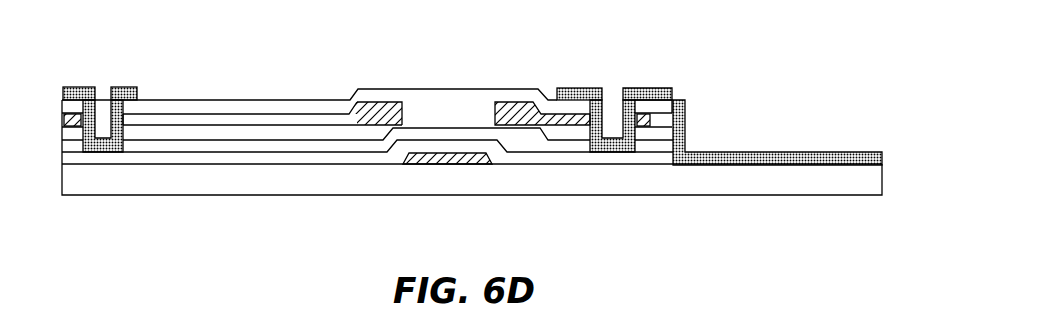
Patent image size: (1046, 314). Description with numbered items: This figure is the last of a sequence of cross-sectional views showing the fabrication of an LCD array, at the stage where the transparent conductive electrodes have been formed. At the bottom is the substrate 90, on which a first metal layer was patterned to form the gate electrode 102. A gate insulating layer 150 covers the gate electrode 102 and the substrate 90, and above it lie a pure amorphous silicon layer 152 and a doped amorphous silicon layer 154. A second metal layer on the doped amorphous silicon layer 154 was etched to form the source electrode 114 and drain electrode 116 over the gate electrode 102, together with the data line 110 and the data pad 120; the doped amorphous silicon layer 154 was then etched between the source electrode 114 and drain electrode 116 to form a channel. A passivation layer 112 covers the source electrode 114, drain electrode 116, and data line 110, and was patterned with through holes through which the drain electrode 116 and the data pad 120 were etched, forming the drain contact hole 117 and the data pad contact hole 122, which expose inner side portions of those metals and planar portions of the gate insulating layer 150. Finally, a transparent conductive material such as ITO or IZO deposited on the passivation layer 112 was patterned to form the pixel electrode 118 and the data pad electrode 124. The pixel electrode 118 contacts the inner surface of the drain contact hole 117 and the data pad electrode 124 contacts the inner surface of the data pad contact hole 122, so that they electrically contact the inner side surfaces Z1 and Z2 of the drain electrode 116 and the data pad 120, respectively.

The substrate 90 is at (733, 183).
The gate electrode 102 is at (435, 158).
The data line 110 is at (275, 106).
The passivation layer 112 is at (437, 96).
The source electrode 114 is at (384, 105).
The drain electrode 116 is at (512, 103).
The drain contact hole 117 is at (612, 101).
The pixel electrode 118 is at (746, 157).
The data pad 120 is at (130, 107).
The data pad contact hole 122 is at (104, 98).
The data pad electrode 124 is at (72, 88).
The gate insulating layer 150 is at (556, 153).
The pure amorphous silicon layer 152 is at (187, 148).
The doped amorphous silicon layer 154 is at (319, 133).
The inner side surface of the drain electrode Z1 is at (607, 155).
The inner side surface of the data pad Z2 is at (88, 150).